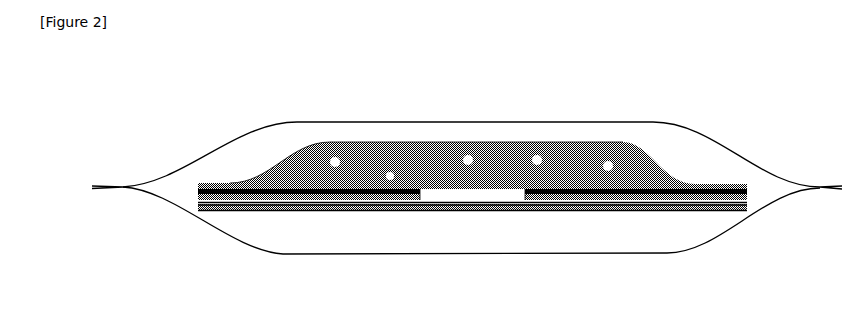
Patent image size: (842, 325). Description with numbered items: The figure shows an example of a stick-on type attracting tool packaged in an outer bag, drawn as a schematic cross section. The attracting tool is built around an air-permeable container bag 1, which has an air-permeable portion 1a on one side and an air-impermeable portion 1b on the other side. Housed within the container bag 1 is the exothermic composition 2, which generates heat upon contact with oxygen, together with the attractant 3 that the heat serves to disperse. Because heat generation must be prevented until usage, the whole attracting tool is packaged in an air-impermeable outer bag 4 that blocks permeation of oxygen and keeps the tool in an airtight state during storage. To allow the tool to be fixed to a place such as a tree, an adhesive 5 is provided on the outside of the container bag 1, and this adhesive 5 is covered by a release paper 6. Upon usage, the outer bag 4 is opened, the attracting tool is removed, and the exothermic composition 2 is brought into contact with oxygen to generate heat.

The air-permeable container bag 1 is at (433, 142).
The air-permeable portion 1a is at (358, 142).
The air-impermeable portion 1b is at (497, 194).
The exothermic composition 2 is at (638, 180).
The attractant 3 is at (537, 160).
The air-impermeable outer bag 4 is at (705, 128).
The adhesive 5 is at (418, 204).
The release paper 6 is at (341, 211).